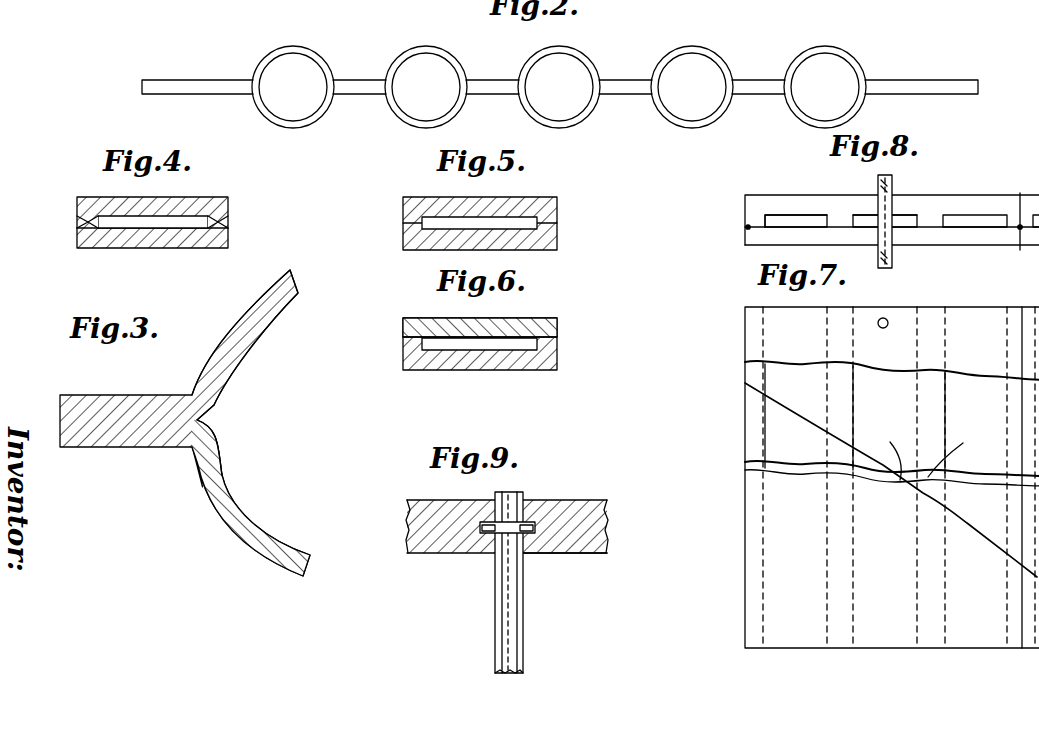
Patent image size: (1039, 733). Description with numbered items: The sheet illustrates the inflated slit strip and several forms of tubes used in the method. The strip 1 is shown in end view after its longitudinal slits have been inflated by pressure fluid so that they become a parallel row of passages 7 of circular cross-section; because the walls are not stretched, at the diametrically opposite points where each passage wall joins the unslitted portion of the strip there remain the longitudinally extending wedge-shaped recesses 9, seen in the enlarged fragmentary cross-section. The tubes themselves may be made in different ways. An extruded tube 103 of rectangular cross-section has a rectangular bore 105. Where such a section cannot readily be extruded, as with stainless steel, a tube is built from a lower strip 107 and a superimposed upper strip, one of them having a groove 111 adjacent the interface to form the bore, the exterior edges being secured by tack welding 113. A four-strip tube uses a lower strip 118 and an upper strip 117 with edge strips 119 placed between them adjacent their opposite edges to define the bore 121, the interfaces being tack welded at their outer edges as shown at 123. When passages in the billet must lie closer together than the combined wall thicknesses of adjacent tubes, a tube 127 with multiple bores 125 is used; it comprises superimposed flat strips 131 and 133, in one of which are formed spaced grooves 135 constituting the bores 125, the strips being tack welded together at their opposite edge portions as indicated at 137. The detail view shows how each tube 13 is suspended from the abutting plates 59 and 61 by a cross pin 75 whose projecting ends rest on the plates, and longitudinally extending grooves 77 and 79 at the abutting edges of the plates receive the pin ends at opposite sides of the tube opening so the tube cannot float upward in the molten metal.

In FIG. 2, the strip 1 is at (196, 76).
In FIG. 3, the strip 1 is at (104, 391).
In FIG. 2, the passages 7 is at (305, 78).
In FIG. 3, the passages 7 is at (240, 340).
In FIG. 3, the wedge-shaped recesses 9 is at (199, 419).
In FIG. 9, the tube 13 is at (523, 632).
In FIG. 9, the plate 59 is at (443, 545).
In FIG. 9, the plate 61 is at (585, 548).
In FIG. 9, the cross pin 75 is at (527, 522).
In FIG. 8, the cross pin 75 is at (892, 256).
In FIG. 7, the cross pin 75 is at (887, 318).
In FIG. 9, the groove 77 is at (483, 537).
In FIG. 9, the groove 79 is at (537, 537).
In FIG. 5, the tube 103 is at (447, 203).
In FIG. 5, the bore 105 is at (430, 253).
In FIG. 6, the lower strip 107 is at (463, 357).
In FIG. 6, the groove 111 is at (488, 343).
In FIG. 6, the welding 113 is at (405, 337).
In FIG. 4, the upper strip 117 is at (136, 204).
In FIG. 4, the lower member 118 is at (196, 240).
In FIG. 4, the strips 119 is at (218, 222).
In FIG. 4, the bore 121 is at (162, 228).
In FIG. 4, the welding 123 is at (84, 226).
In FIG. 8, the bores 125 is at (790, 218).
In FIG. 7, the bores 125 is at (803, 512).
In FIG. 8, the tube 127 is at (996, 193).
In FIG. 7, the tube 127 is at (1033, 292).
In FIG. 8, the flat strip 131 is at (767, 215).
In FIG. 7, the flat strip 131 is at (753, 375).
In FIG. 8, the flat strip 133 is at (768, 235).
In FIG. 7, the flat strip 133 is at (805, 347).
In FIG. 8, the grooves 135 is at (867, 215).
In FIG. 7, the grooves 135 is at (943, 415).
In FIG. 8, the welding 137 is at (748, 227).